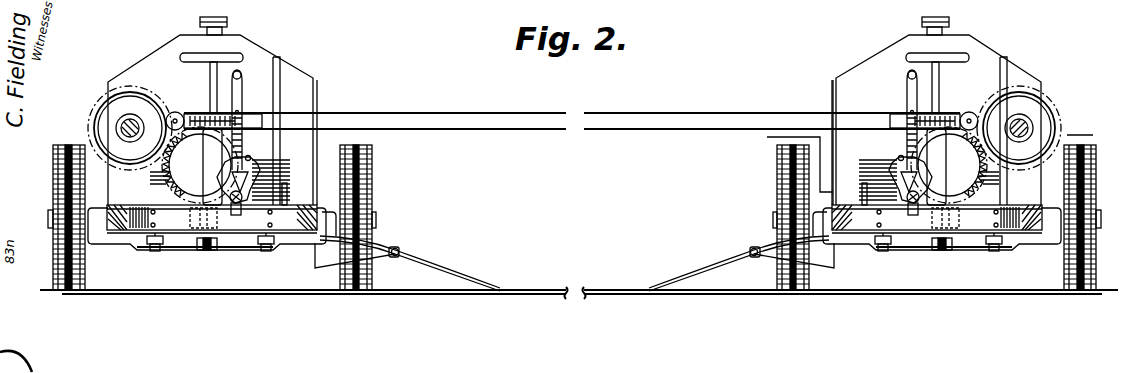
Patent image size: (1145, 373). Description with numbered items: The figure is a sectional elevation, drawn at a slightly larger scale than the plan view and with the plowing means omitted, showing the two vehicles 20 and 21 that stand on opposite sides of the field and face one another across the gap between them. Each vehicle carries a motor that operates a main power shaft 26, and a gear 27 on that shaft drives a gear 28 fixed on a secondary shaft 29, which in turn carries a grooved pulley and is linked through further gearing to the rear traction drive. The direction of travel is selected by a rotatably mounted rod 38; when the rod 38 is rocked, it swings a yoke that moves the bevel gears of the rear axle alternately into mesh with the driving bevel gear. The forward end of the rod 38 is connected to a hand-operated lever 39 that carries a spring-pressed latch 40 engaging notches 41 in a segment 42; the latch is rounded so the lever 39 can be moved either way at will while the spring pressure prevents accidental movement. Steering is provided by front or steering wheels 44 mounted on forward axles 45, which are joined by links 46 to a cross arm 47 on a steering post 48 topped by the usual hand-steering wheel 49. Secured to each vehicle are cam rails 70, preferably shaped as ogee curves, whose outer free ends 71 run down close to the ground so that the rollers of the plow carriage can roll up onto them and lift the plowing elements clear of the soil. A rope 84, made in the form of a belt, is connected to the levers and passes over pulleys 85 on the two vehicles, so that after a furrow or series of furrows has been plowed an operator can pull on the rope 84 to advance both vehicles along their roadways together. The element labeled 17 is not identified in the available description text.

The ledge 17 is at (1093, 134).
The vehicle 20 is at (868, 60).
The vehicle 21 is at (304, 72).
The main power shaft 26 is at (179, 198).
The gear 27 is at (168, 166).
The gear 28 is at (147, 92).
The secondary shaft 29 is at (117, 127).
The rod 38 is at (252, 230).
The hand-operated lever 39 is at (246, 76).
The spring-pressed latch 40 is at (237, 132).
The notches 41 is at (250, 156).
The segment 42 is at (261, 177).
The front or steering wheels 44 is at (55, 265).
The forward axles 45 is at (108, 241).
The links 46 is at (152, 252).
The cross arm 47 is at (195, 246).
The steering post 48 is at (210, 80).
The hand-steering wheel 49 is at (183, 53).
The cam rails 70 is at (392, 248).
The outer free ends 71 is at (437, 272).
The rope 84 is at (443, 111).
The pulleys 85 is at (176, 113).